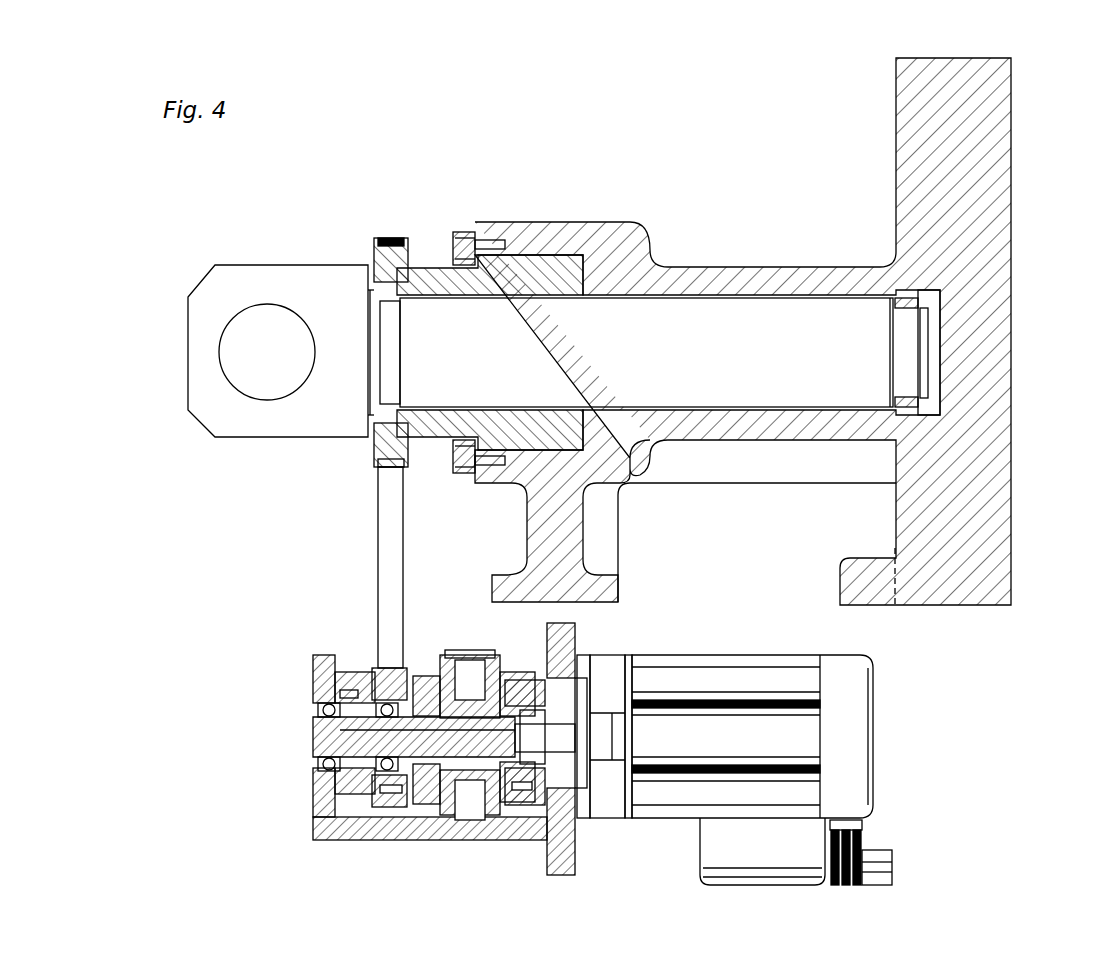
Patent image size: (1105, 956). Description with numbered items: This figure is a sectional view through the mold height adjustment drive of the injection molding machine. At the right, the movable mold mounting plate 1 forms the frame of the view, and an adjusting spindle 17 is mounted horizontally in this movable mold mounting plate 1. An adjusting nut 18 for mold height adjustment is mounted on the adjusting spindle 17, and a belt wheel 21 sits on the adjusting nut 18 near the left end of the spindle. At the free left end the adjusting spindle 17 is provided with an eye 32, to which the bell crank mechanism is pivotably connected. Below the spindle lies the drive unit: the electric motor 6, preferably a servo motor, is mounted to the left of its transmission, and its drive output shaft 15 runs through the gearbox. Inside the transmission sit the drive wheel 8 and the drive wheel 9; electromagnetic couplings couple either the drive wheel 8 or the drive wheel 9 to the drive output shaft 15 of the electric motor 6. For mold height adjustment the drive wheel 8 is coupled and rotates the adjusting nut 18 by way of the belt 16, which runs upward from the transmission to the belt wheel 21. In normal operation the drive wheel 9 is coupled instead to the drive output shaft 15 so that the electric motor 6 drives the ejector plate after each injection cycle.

The movable mold mounting plate 1 is at (958, 438).
The electric motor 6 is at (843, 700).
The drive wheel 8 is at (393, 806).
The drive wheel 9 is at (528, 806).
The drive output shaft 15 is at (340, 736).
The belt 16 is at (390, 528).
The adjusting spindle 17 is at (743, 337).
The adjusting nut 18 is at (525, 283).
The belt wheel 21 is at (406, 240).
The eye 32 is at (223, 410).